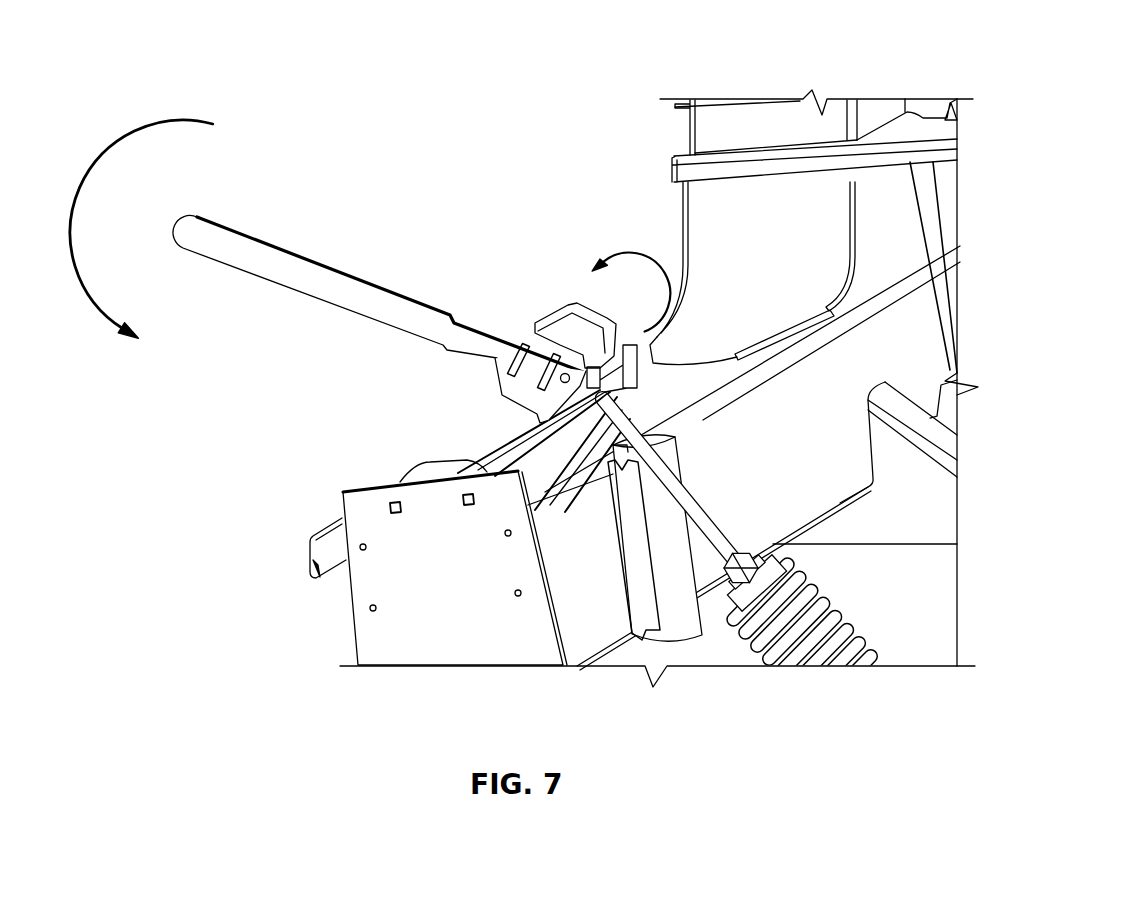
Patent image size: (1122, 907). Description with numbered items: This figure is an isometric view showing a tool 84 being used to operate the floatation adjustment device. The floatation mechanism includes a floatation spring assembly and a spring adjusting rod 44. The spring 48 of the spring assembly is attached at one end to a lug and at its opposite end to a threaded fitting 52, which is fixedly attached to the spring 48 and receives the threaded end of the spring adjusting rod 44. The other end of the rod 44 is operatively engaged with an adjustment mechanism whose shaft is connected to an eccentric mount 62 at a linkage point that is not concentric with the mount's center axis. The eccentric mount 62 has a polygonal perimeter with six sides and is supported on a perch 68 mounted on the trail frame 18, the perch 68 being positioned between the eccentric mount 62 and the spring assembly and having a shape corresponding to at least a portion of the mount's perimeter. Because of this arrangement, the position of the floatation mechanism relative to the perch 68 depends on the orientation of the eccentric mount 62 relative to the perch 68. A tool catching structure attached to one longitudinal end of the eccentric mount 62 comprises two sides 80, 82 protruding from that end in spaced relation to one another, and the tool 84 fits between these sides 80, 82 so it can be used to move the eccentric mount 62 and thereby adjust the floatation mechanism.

The trail frame 18 is at (722, 393).
The spring adjusting rod 44 is at (688, 499).
The spring 48 is at (775, 657).
The threaded fitting 52 is at (772, 543).
The eccentric mount 62 is at (565, 307).
The perch 68 is at (537, 467).
The side 80 is at (500, 397).
The side 82 is at (500, 361).
The tool 84 is at (278, 257).